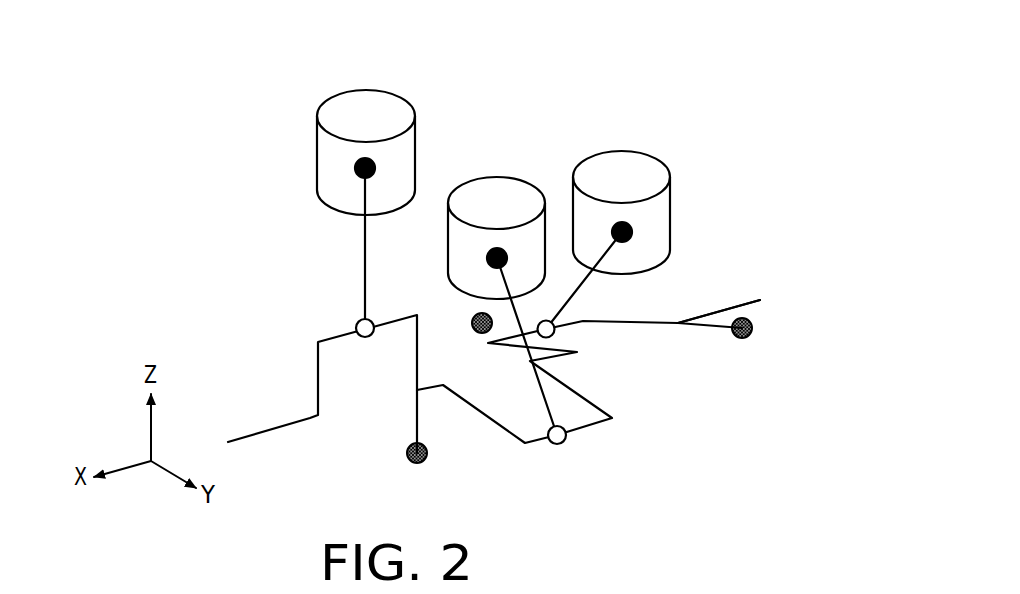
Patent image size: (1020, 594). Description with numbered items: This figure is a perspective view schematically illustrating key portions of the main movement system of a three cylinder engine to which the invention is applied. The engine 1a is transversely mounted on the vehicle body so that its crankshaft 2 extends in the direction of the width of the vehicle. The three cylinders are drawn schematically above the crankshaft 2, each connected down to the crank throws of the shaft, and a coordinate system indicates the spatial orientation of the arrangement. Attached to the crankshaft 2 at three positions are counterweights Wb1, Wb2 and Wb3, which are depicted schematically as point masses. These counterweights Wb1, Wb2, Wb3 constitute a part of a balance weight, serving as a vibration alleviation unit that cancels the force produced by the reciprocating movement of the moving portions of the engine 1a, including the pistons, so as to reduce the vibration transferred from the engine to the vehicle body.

The engine 1a is at (743, 145).
The crankshaft 2 is at (735, 305).
The counterweight Wb1 is at (413, 463).
The counterweight Wb2 is at (474, 330).
The counterweight Wb3 is at (738, 338).